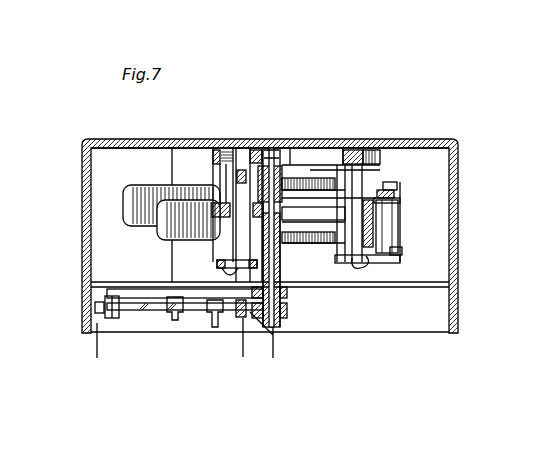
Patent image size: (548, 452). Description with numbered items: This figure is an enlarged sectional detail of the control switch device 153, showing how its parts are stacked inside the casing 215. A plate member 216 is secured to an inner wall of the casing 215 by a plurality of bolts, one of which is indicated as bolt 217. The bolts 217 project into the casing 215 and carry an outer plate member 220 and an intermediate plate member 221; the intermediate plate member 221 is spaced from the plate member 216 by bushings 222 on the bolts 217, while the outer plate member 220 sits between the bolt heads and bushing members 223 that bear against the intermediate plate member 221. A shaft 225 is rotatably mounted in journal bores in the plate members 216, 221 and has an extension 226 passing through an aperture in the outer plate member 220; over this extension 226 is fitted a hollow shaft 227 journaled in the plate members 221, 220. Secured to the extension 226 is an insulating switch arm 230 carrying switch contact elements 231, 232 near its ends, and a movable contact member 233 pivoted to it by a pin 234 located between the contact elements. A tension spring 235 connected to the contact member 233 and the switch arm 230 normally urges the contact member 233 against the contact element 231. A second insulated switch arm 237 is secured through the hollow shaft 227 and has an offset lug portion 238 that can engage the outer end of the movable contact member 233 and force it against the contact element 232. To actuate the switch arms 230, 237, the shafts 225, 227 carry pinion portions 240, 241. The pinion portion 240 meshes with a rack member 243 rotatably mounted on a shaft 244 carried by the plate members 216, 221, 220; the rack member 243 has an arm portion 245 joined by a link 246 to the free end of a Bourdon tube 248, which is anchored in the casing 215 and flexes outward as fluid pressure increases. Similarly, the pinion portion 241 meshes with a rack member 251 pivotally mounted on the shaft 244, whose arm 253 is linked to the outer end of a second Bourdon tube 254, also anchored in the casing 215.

The control switch device 153 is at (460, 199).
The casing 215 is at (425, 142).
The plate member 216 is at (312, 158).
The bolt 217 is at (402, 251).
The outer plate member 220 is at (300, 266).
The intermediate plate member 221 is at (332, 212).
The bushing 222 is at (226, 172).
The bushing member 223 is at (227, 248).
The shaft 225 is at (254, 170).
The extension 226 is at (267, 313).
The hollow shaft 227 is at (228, 278).
The switch arm 230 is at (283, 316).
The switch contact element 231 is at (237, 323).
The switch contact element 232 is at (96, 312).
The movable contact member 233 is at (152, 312).
The pin 234 is at (177, 323).
The tension spring 235 is at (213, 322).
The switch arm 237 is at (144, 293).
The offset lug portion 238 is at (103, 306).
The pinion portion 240 is at (278, 178).
The pinion portion 241 is at (238, 213).
The rack member 243 is at (342, 167).
The shaft 244 is at (357, 192).
The arm portion 245 is at (394, 185).
The link 246 is at (394, 198).
The Bourdon tube 248 is at (123, 202).
The rack member 251 is at (318, 247).
The arm 253 is at (388, 238).
The Bourdon tube 254 is at (155, 236).